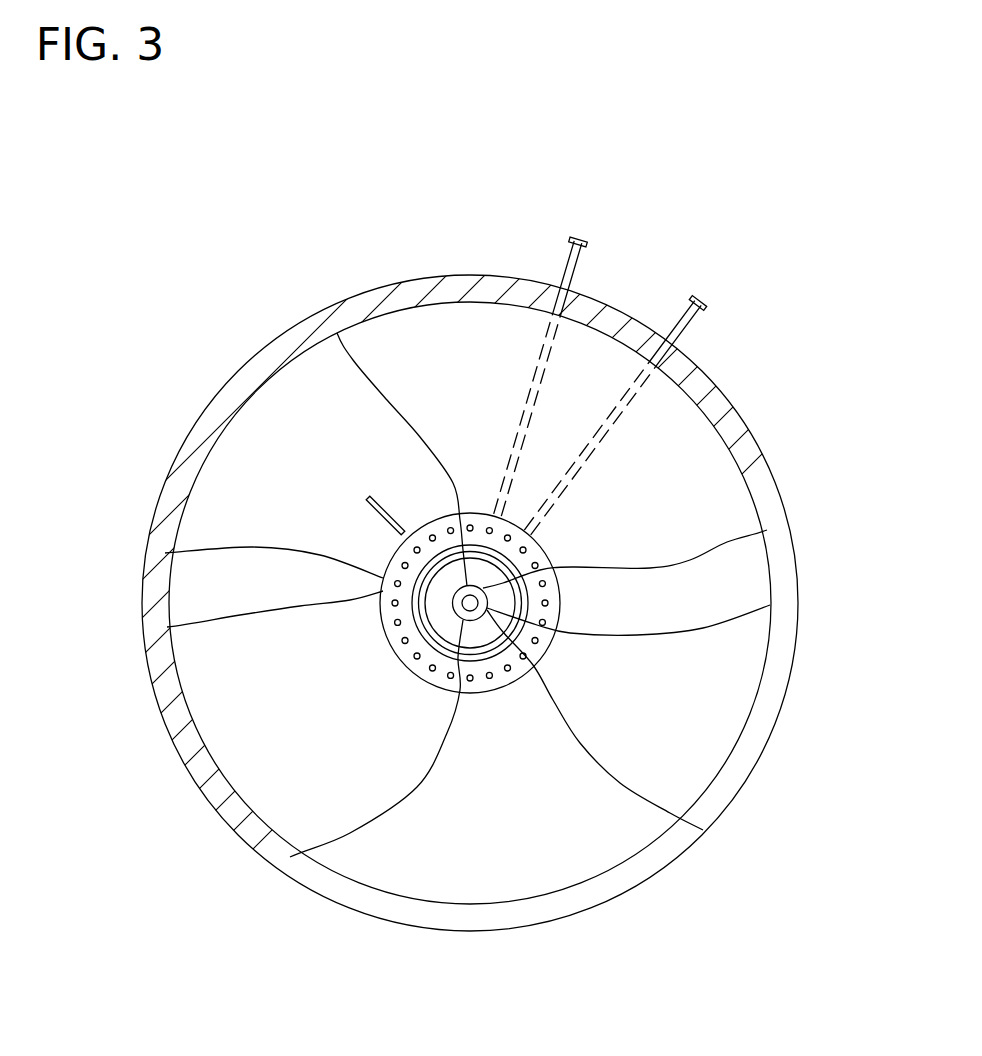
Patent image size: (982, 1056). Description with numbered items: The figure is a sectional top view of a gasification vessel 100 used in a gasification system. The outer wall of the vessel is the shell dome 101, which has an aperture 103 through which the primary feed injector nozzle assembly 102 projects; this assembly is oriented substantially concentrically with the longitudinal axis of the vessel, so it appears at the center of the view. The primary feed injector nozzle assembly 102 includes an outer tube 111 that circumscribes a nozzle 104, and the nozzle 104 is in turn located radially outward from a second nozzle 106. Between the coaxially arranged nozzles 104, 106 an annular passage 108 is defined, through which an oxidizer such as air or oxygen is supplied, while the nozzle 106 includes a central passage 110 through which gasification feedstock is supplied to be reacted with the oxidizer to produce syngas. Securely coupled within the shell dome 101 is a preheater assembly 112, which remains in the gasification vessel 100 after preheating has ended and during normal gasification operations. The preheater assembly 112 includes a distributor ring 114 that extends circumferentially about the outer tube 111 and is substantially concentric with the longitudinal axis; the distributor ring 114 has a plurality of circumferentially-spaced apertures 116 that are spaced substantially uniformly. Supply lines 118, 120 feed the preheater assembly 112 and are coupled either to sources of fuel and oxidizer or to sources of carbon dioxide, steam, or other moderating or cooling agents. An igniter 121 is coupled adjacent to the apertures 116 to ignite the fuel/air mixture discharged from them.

The gasification vessel 100 is at (256, 306).
The shell dome 101 is at (167, 477).
The primary feed injector nozzle assembly 102 is at (481, 660).
The aperture 103 is at (422, 641).
The nozzle 104 is at (770, 605).
The nozzle 106 is at (767, 530).
The annular passage 108 is at (290, 857).
The central passage 110 is at (337, 333).
The outer tube 111 is at (703, 830).
The preheater assembly 112 is at (466, 380).
The distributor ring 114 is at (165, 553).
The apertures 116 is at (167, 627).
The supply line 118 is at (578, 237).
The supply line 120 is at (702, 297).
The igniter 121 is at (367, 513).